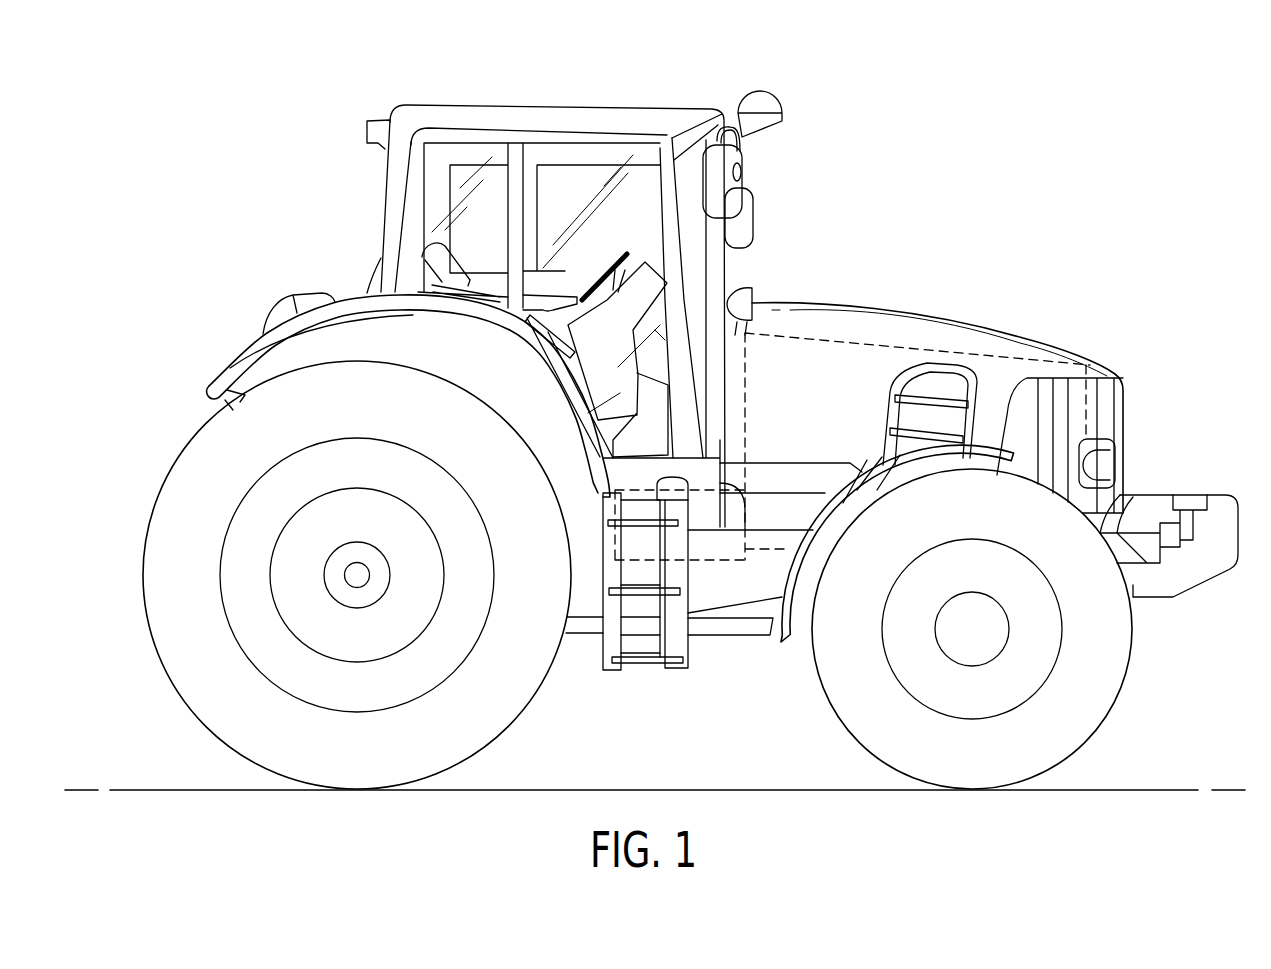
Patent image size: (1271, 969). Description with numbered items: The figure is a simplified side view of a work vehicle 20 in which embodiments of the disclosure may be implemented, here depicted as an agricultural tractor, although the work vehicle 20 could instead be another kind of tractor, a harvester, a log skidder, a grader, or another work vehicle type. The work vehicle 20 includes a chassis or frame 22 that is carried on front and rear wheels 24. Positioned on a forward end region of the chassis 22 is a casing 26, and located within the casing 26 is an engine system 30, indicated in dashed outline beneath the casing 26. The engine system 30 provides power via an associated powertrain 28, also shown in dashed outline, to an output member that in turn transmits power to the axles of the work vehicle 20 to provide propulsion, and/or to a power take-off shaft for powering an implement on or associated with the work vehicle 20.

The work vehicle 20 is at (306, 91).
The chassis or frame 22 is at (639, 89).
The front and rear wheels 24 is at (357, 574).
The casing 26 is at (1022, 332).
The powertrain 28 is at (741, 582).
The engine system 30 is at (920, 347).